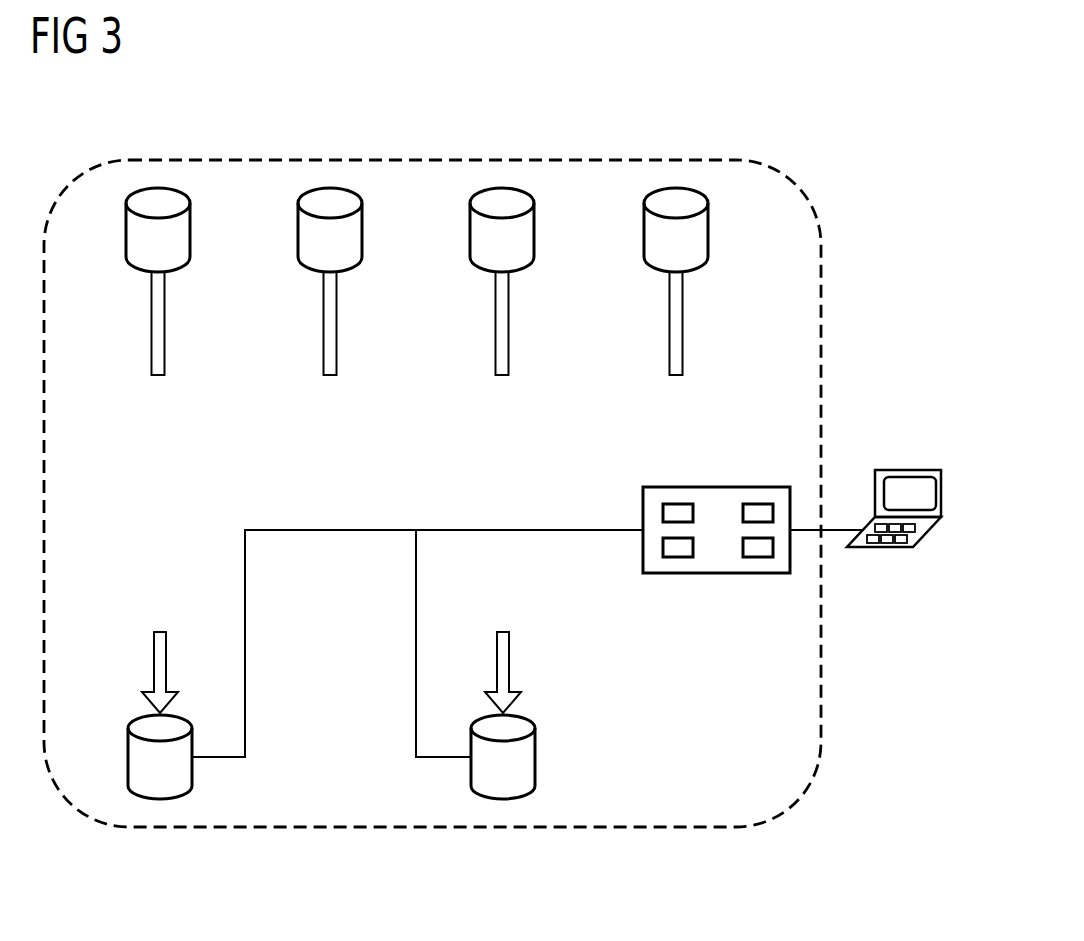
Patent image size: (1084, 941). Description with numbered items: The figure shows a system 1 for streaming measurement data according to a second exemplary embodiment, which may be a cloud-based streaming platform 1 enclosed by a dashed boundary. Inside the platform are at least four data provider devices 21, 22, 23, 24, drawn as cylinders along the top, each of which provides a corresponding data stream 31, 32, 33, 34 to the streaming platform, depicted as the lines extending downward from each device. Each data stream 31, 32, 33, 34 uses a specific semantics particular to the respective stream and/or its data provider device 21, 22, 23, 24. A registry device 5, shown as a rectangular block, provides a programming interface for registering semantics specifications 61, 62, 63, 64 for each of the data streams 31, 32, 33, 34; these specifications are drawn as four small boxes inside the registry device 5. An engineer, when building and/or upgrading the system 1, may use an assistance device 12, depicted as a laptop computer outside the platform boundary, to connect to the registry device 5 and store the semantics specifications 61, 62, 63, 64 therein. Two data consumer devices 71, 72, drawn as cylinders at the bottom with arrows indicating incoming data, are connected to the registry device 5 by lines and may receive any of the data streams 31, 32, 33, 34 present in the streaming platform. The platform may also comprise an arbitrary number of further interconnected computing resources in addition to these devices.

The system 1 is at (829, 137).
The data provider device 21 is at (190, 230).
The data provider device 22 is at (362, 230).
The data provider device 23 is at (534, 230).
The data provider device 24 is at (708, 230).
The data stream 31 is at (165, 340).
The data stream 32 is at (337, 340).
The data stream 33 is at (509, 340).
The data stream 34 is at (683, 340).
The registry device 5 is at (643, 506).
The semantics specification 61 is at (677, 513).
The semantics specification 62 is at (677, 548).
The semantics specification 63 is at (757, 513).
The semantics specification 64 is at (757, 548).
The assistance device 12 is at (910, 470).
The data consumer device 71 is at (160, 799).
The data consumer device 72 is at (505, 799).